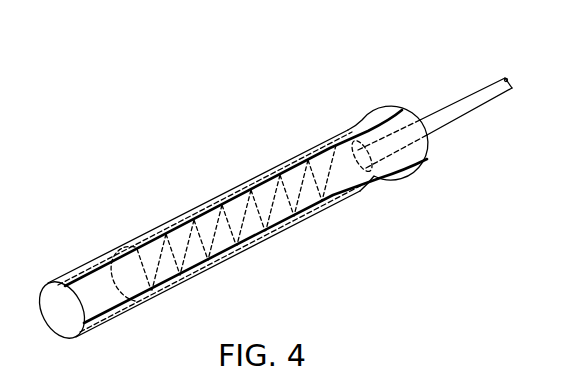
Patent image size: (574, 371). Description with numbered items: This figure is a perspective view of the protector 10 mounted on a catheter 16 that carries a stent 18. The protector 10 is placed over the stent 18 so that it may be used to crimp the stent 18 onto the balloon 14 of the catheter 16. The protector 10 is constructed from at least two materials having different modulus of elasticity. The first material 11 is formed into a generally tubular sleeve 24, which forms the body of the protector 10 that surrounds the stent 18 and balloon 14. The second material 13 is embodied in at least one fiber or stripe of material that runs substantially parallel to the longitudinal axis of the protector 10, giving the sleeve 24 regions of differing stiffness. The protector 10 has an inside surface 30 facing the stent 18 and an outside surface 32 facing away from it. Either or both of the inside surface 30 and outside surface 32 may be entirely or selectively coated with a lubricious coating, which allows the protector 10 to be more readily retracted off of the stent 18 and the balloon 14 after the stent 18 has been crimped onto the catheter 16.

The protector 10 is at (268, 194).
The first material 11 is at (137, 304).
The second material 13 is at (97, 328).
The balloon 14 is at (263, 242).
The catheter 16 is at (455, 101).
The stent 18 is at (220, 195).
The tubular sleeve 24 is at (150, 238).
The inside surface 30 is at (378, 109).
The outside surface 32 is at (338, 146).